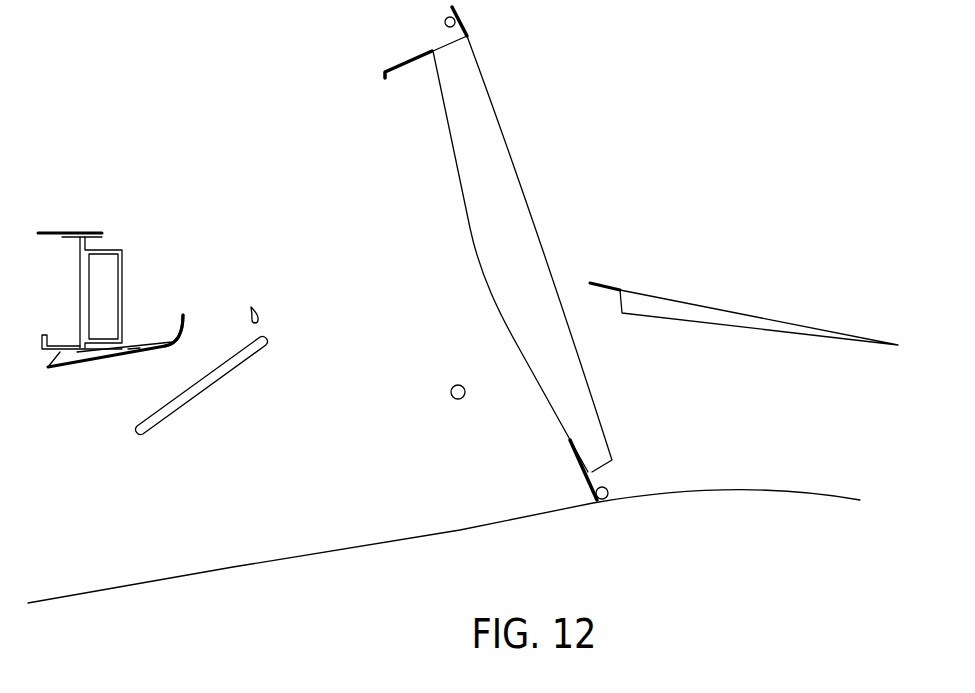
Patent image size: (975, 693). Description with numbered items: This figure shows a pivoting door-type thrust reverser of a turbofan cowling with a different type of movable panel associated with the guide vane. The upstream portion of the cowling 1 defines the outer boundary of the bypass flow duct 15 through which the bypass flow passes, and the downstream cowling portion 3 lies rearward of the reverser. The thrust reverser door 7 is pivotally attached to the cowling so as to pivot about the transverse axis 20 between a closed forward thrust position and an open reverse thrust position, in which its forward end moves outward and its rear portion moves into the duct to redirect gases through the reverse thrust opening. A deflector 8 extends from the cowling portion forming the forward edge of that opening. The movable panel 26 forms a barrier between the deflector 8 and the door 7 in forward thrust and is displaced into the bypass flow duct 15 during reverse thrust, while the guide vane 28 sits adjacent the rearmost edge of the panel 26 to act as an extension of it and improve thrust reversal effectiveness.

The upstream portion of the cowling 1 is at (75, 232).
The downstream cowling portion 3 is at (697, 308).
The thrust reverser door 7 is at (503, 202).
The deflector 8 is at (173, 333).
The bypass flow duct 15 is at (747, 398).
The transverse axis 20 is at (458, 399).
The movable panel 26 is at (248, 347).
The guide vane 28 is at (260, 320).